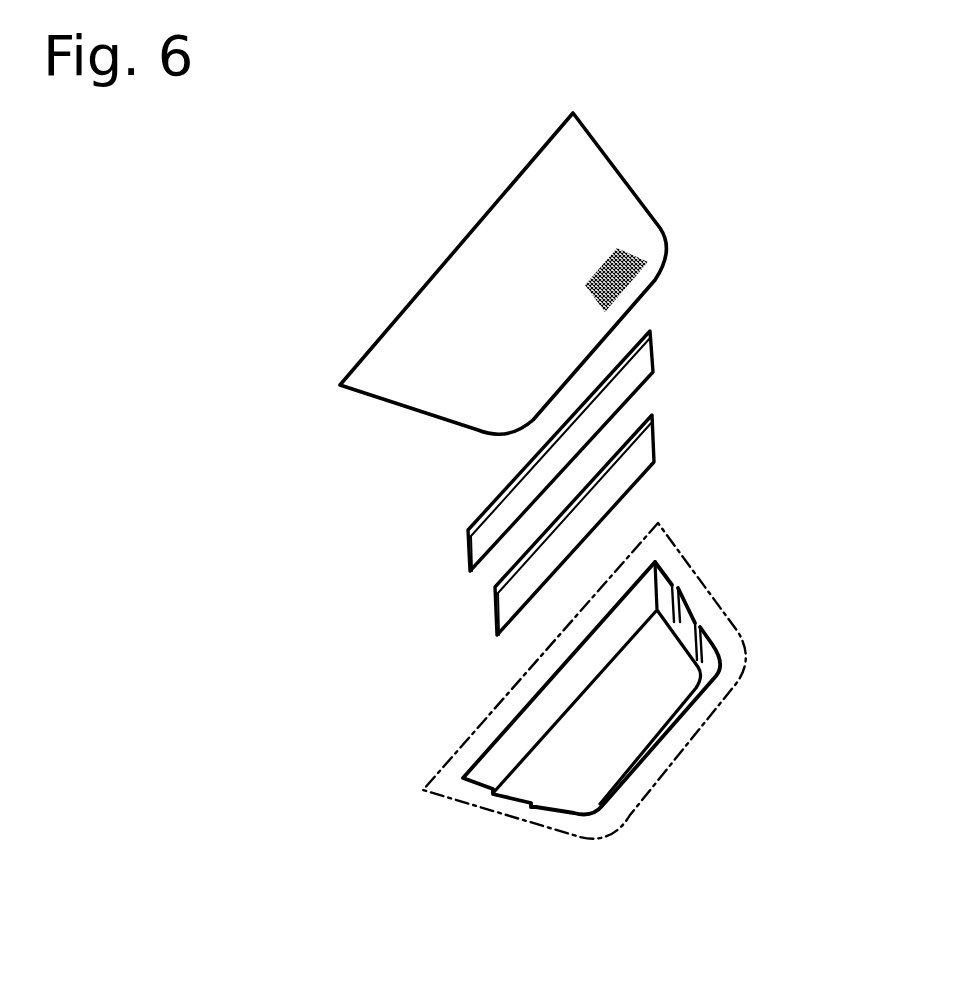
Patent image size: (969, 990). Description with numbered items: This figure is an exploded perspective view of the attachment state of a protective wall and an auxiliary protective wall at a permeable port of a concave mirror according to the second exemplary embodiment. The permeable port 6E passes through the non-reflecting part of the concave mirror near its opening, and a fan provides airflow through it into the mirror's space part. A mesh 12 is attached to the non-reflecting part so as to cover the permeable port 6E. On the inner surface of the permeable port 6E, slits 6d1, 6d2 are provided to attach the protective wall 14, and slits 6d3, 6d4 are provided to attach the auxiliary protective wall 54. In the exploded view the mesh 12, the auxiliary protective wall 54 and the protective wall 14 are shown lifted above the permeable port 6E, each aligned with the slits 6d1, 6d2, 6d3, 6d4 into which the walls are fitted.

The mesh 12 is at (495, 258).
The auxiliary protective wall 54 is at (642, 363).
The protective wall 14 is at (642, 450).
The permeable port 6E is at (579, 727).
The slit 6d1 is at (698, 623).
The slit 6d2 is at (475, 889).
The slit 6d3 is at (681, 585).
The slit 6d4 is at (495, 792).